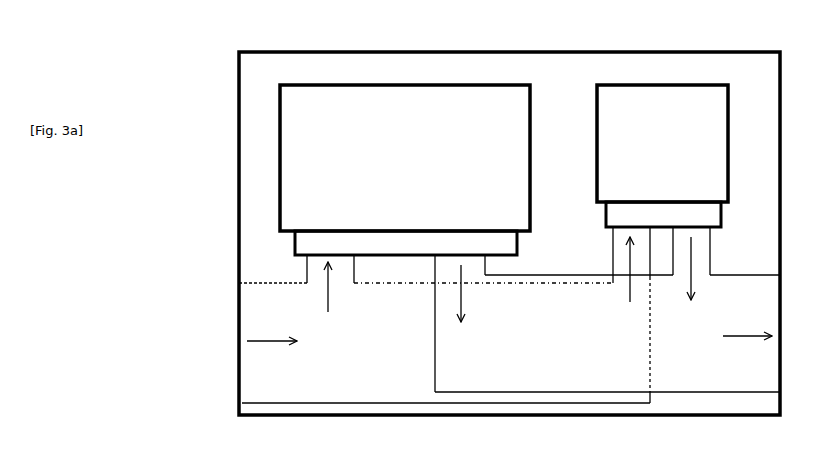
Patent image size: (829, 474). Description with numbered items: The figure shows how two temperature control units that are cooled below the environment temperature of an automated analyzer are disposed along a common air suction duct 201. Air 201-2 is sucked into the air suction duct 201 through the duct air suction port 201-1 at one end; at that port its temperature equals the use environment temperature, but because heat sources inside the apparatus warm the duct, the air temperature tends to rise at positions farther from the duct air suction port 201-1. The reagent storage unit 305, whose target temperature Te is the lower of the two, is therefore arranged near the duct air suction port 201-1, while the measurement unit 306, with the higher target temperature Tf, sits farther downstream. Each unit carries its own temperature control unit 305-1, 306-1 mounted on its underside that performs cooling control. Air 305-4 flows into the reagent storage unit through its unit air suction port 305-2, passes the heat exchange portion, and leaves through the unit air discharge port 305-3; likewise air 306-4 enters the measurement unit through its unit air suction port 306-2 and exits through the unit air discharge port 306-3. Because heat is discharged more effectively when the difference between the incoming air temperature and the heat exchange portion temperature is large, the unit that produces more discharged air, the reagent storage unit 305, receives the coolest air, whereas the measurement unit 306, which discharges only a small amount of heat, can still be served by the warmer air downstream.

The air suction duct 201 is at (298, 405).
The duct air suction port 201-1 is at (239, 307).
The air sucked from duct air suction port 201-2 is at (267, 347).
The reagent storage unit 305 is at (393, 100).
The temperature control unit 305-1 is at (392, 243).
The unit air suction port 305-2 is at (316, 262).
The unit air discharge port 305-3 is at (476, 262).
The air introduced from unit air suction port 305-4 is at (327, 283).
The measurement unit 306 is at (702, 107).
The temperature control unit 306-1 is at (643, 213).
The unit air suction port 306-2 is at (618, 238).
The unit air discharge port 306-3 is at (702, 238).
The air introduced from unit air suction port 306-4 is at (630, 287).